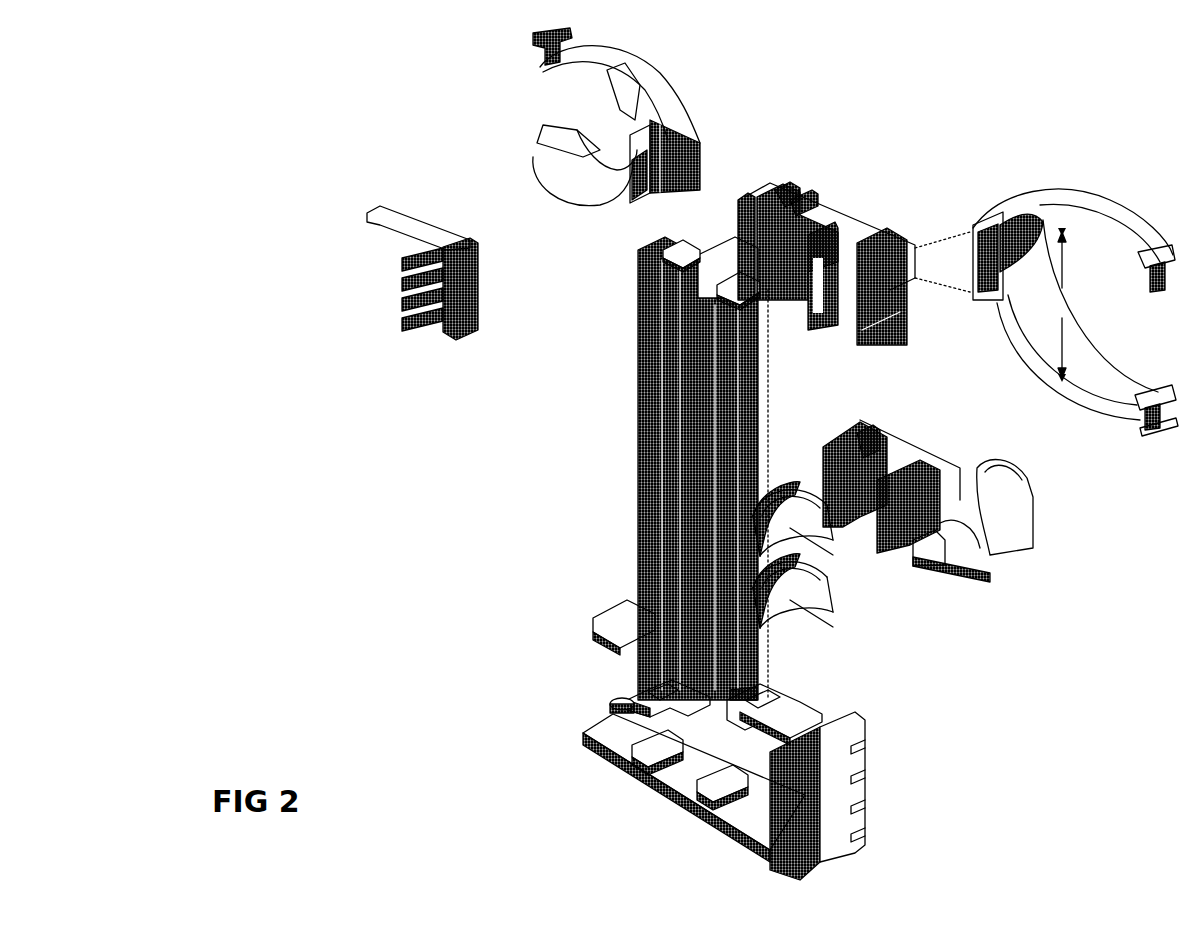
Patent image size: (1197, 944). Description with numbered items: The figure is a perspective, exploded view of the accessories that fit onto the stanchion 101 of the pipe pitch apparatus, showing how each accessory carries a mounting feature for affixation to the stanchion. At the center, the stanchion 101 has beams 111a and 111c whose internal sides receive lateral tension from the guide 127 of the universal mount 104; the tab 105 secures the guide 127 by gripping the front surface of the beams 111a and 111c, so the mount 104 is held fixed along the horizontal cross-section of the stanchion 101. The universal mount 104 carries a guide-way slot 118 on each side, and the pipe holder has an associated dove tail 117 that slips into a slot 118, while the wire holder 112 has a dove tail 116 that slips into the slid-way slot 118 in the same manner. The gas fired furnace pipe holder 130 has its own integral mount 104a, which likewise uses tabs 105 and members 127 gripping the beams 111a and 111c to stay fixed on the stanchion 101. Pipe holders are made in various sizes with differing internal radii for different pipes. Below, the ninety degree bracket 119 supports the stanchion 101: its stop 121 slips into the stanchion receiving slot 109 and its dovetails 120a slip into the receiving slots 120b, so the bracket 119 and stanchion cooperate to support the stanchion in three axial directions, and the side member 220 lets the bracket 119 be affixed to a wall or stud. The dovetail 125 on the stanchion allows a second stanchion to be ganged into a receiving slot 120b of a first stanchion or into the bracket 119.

The stanchion 101 is at (625, 465).
The universal mount 104 is at (850, 208).
The mount 104a is at (920, 450).
The tab 105 is at (835, 327).
The receiving slot 109 is at (792, 700).
The beam 111a is at (640, 385).
The beam 111c is at (705, 545).
The wire holder 112 is at (395, 305).
The dove tail 116 is at (470, 272).
The dove tail 117 is at (966, 225).
The slot 118 is at (745, 210).
The 90 degree bracket 119 is at (580, 737).
The dovetail 120a is at (690, 795).
The dove tail receiving slot 120b is at (750, 767).
The stop 121 is at (612, 705).
The dovetail 125 is at (655, 245).
The guide 127 is at (782, 210).
The gas fired furnace pipe holder 130 is at (1000, 585).
The side member 220 is at (862, 762).